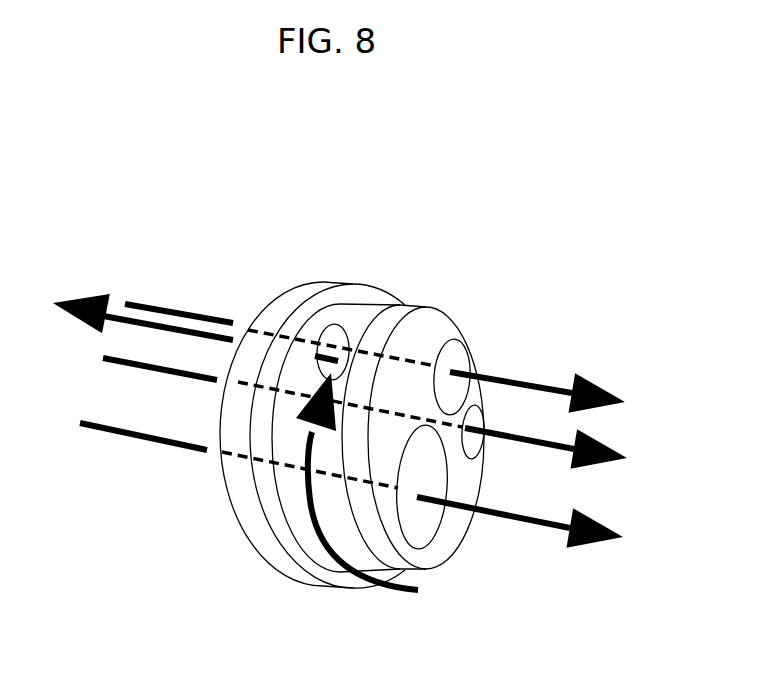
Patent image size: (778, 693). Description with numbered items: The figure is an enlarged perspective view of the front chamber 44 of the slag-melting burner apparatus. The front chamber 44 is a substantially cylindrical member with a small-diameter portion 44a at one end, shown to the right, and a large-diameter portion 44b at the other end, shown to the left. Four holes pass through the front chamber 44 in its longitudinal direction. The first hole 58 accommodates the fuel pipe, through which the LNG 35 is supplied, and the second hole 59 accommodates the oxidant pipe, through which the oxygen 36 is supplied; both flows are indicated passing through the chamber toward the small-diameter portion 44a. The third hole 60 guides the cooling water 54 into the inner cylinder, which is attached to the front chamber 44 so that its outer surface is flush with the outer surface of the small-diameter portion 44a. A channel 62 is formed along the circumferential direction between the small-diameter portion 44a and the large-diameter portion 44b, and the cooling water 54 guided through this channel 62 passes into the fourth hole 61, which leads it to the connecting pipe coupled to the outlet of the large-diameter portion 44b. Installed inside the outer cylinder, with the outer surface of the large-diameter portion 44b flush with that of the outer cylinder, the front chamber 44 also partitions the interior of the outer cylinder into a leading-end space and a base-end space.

The front chamber 44 is at (290, 190).
The small-diameter portion 44a is at (414, 305).
The large-diameter portion 44b is at (318, 286).
The fourth hole 61 is at (344, 332).
The first hole 58 is at (455, 356).
The third hole 60 is at (474, 440).
The second hole 59 is at (430, 527).
The LNG 35 is at (534, 381).
The cooling water 54 is at (533, 442).
The oxygen 36 is at (547, 532).
The channel 62 is at (311, 528).